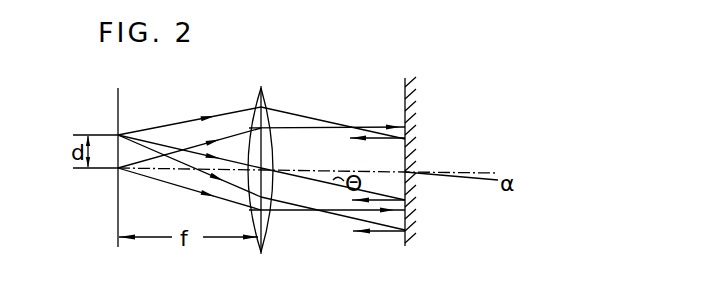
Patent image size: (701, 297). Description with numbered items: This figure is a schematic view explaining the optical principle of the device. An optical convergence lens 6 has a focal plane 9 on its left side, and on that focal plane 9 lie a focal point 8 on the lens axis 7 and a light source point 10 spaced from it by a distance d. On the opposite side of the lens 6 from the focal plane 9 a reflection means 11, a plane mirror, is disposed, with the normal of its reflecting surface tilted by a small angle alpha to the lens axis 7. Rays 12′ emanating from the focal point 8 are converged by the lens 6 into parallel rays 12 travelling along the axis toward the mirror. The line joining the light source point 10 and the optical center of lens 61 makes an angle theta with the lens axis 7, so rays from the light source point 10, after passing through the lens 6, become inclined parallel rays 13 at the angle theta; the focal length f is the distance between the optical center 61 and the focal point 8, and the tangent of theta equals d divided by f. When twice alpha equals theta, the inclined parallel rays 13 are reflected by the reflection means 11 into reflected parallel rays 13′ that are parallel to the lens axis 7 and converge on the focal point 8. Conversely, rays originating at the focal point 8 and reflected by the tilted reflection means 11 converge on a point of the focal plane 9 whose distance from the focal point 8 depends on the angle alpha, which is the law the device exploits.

The optical convergence lens 6 is at (244, 150).
The optical center of lens 61 is at (249, 160).
The lens axis 7 is at (296, 170).
The focal point 8 is at (118, 170).
The focal plane 9 is at (118, 101).
The light source point 10 is at (118, 134).
The reflection means 11 is at (409, 95).
The parallel rays 12 is at (372, 125).
The rays emanated from the focal point 12′ is at (160, 174).
The inclined parallel rays 13 is at (306, 112).
The reflected parallel rays 13′ is at (382, 139).